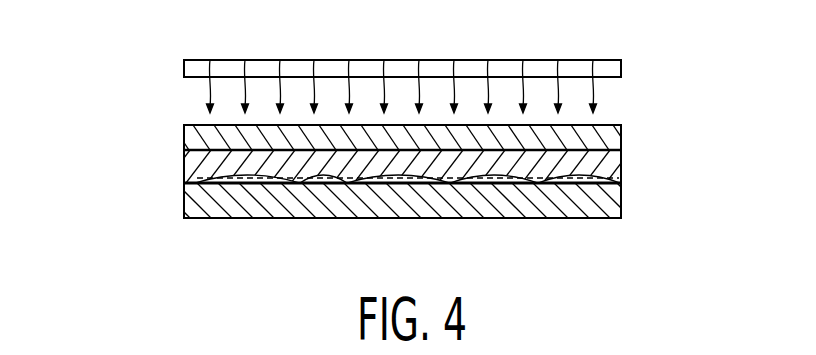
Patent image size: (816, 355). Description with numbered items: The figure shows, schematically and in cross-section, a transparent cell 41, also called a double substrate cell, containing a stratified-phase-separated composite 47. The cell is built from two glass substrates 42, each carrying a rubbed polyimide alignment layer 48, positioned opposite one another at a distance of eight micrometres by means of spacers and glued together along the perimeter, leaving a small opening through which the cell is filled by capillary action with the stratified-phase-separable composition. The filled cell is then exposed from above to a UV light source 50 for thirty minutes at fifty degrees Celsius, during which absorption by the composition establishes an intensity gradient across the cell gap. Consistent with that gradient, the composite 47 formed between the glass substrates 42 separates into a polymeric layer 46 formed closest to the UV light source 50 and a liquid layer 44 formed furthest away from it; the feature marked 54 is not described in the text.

The transparent cell 41 is at (372, 159).
The glass substrates 42 is at (185, 197).
The liquid layer 44 is at (623, 180).
The polymeric layer 46 is at (623, 157).
The stratified-phase-separated composite 47 is at (441, 202).
The rubbed polyimide alignment layer 48 is at (277, 185).
The UV light source 50 is at (410, 58).
The focal plane 54 is at (397, 180).